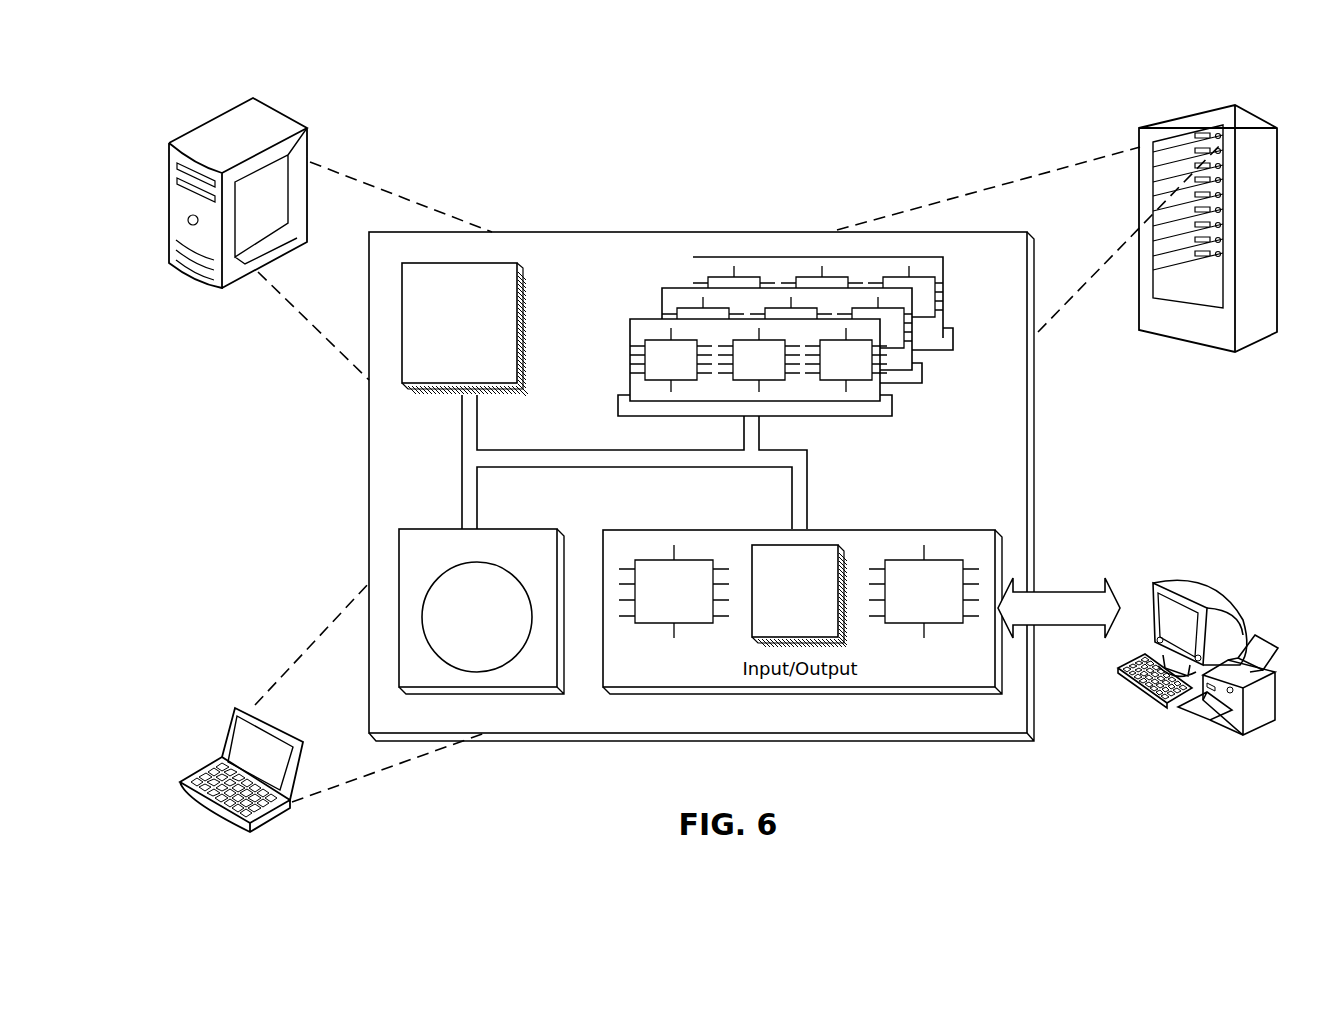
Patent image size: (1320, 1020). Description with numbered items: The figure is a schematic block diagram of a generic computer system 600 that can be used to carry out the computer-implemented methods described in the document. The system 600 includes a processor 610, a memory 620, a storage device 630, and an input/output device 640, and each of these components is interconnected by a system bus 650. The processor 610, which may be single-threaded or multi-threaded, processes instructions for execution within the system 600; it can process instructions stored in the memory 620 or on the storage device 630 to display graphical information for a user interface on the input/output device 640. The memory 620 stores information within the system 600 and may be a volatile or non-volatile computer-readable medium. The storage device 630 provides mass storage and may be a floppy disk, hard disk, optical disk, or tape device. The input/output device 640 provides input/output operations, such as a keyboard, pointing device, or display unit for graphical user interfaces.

The computer system 600 is at (539, 123).
The processor 610 is at (473, 375).
The memory 620 is at (949, 380).
The storage device 630 is at (520, 680).
The input/output device 640 is at (1157, 582).
The system bus 650 is at (628, 470).